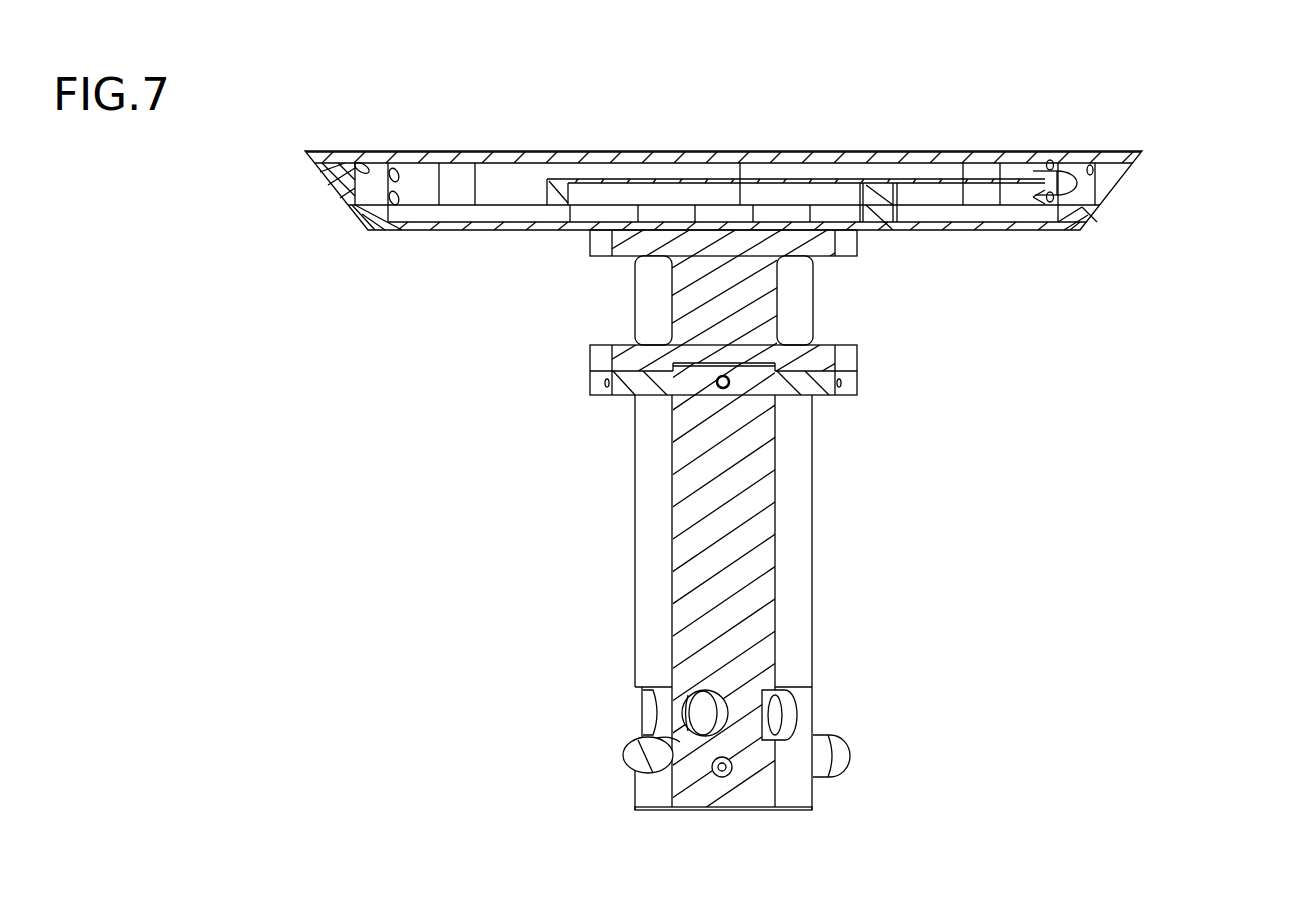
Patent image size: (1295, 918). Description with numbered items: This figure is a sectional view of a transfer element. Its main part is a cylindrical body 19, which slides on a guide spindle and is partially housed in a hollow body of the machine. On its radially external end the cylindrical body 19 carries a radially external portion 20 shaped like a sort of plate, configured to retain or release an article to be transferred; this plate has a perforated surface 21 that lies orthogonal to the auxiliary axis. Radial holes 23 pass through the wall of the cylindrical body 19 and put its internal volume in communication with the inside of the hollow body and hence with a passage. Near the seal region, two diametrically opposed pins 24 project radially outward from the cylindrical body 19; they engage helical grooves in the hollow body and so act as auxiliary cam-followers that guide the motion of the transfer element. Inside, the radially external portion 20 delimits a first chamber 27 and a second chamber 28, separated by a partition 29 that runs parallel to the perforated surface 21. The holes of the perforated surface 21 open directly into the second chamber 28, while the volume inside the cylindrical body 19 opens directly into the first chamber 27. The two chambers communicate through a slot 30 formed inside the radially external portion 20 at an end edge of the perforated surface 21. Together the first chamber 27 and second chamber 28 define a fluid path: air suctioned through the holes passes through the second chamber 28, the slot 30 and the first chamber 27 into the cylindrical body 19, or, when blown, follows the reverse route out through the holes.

The cylindrical body 19 is at (822, 560).
The radially external portion 20 is at (1133, 143).
The perforated surface 21 is at (880, 152).
The radial holes 23 is at (683, 710).
The pins 24 is at (632, 745).
The first chamber 27 is at (940, 200).
The second chamber 28 is at (502, 178).
The partition 29 is at (760, 180).
The slot 30 is at (1082, 160).